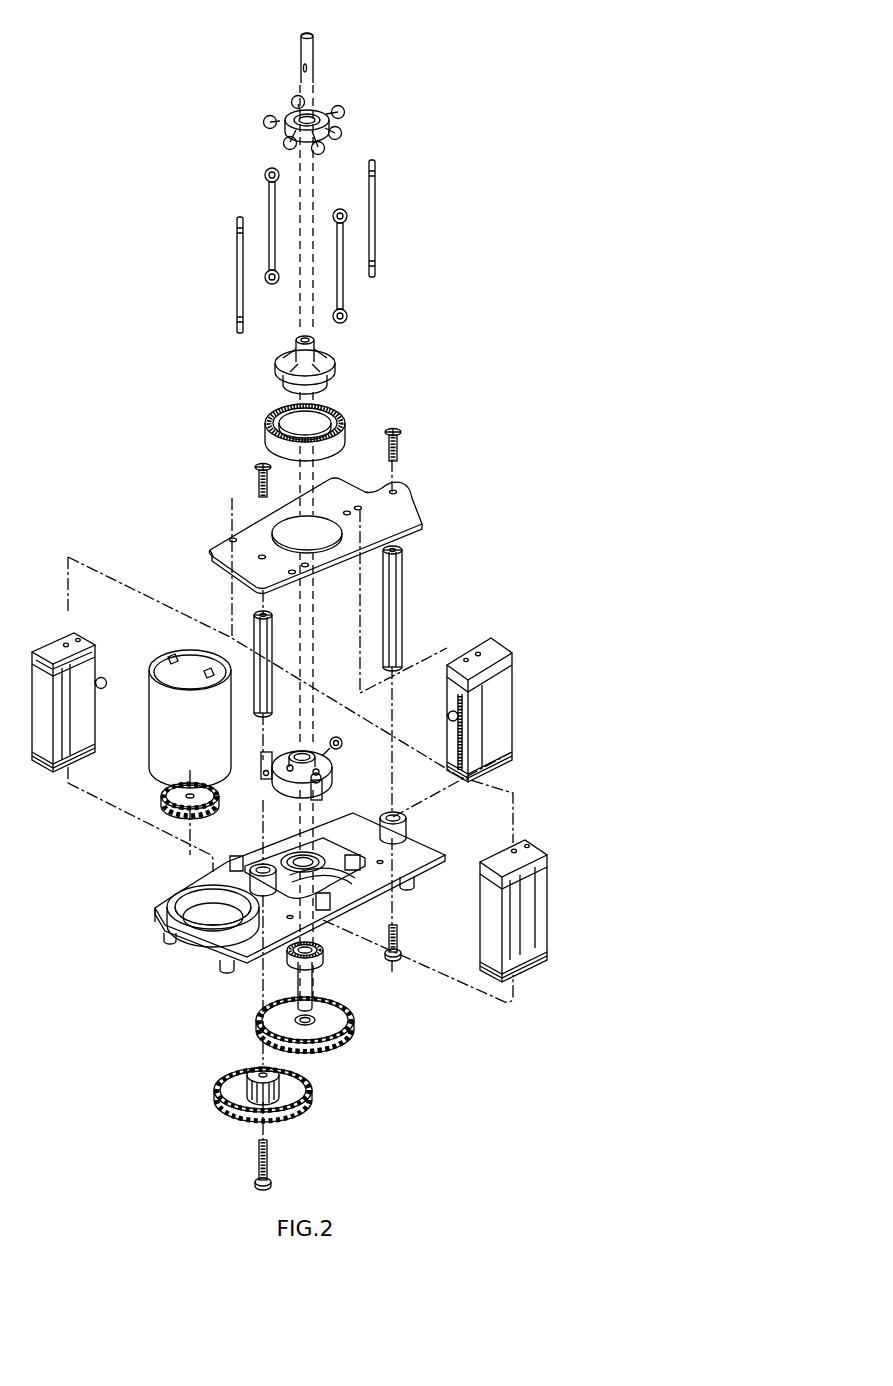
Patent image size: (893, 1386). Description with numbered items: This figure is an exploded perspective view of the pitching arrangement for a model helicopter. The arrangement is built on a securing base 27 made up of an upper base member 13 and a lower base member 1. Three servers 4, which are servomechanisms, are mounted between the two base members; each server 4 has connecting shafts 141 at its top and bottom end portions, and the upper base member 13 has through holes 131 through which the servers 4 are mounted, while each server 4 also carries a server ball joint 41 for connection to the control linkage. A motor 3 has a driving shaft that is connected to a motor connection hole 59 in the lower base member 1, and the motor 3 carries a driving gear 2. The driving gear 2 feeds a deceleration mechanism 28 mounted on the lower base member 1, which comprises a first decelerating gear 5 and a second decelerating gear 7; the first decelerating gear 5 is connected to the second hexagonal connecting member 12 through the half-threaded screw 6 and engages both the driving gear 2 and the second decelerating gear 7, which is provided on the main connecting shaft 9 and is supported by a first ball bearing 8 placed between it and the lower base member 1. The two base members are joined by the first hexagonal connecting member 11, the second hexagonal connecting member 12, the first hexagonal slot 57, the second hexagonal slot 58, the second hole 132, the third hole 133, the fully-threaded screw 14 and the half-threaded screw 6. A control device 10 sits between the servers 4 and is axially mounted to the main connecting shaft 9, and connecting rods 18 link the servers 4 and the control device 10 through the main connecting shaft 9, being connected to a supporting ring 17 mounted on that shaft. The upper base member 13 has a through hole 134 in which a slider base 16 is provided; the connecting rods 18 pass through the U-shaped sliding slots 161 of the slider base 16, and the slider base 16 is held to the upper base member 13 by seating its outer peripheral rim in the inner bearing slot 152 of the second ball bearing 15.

The lower base member 1 is at (294, 900).
The driving gear 2 is at (188, 812).
The motor 3 is at (188, 678).
The server 4 is at (299, 781).
The first decelerating gear 5 is at (246, 1085).
The half-threaded screw 6 is at (260, 1175).
The second decelerating gear 7 is at (330, 1018).
The first ball bearing 8 is at (323, 950).
The main connecting shaft 9 is at (310, 990).
The control device 10 is at (328, 782).
The first hexagonal connecting member 11 is at (395, 622).
The second hexagonal connecting member 12 is at (267, 708).
The upper base member 13 is at (325, 526).
The fully-threaded screw 14 is at (257, 477).
The second ball bearing 15 is at (296, 415).
The slider base 16 is at (344, 356).
The supporting ring 17 is at (325, 112).
The connecting rod 18 is at (375, 220).
The securing base 27 is at (207, 553).
The deceleration mechanism 28 is at (312, 1092).
The server ball joint 41 is at (460, 716).
The first hexagonal slot 57 is at (406, 816).
The second hexagonal slot 58 is at (253, 872).
The motor connection hole 59 is at (205, 918).
The through hole 131 is at (345, 513).
The second hole 132 is at (396, 491).
The third hole 133 is at (258, 538).
The through hole 134 is at (328, 528).
The connecting shaft 141 is at (479, 652).
The inner bearing slot 152 is at (296, 418).
The U-shaped sliding slot 161 is at (333, 358).